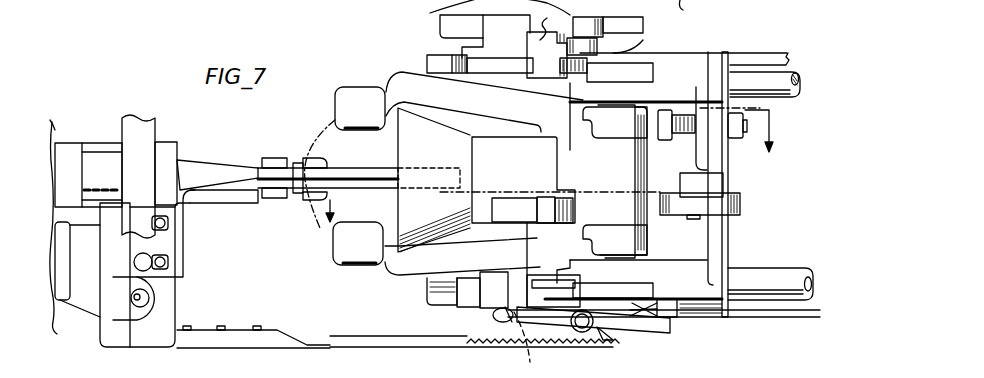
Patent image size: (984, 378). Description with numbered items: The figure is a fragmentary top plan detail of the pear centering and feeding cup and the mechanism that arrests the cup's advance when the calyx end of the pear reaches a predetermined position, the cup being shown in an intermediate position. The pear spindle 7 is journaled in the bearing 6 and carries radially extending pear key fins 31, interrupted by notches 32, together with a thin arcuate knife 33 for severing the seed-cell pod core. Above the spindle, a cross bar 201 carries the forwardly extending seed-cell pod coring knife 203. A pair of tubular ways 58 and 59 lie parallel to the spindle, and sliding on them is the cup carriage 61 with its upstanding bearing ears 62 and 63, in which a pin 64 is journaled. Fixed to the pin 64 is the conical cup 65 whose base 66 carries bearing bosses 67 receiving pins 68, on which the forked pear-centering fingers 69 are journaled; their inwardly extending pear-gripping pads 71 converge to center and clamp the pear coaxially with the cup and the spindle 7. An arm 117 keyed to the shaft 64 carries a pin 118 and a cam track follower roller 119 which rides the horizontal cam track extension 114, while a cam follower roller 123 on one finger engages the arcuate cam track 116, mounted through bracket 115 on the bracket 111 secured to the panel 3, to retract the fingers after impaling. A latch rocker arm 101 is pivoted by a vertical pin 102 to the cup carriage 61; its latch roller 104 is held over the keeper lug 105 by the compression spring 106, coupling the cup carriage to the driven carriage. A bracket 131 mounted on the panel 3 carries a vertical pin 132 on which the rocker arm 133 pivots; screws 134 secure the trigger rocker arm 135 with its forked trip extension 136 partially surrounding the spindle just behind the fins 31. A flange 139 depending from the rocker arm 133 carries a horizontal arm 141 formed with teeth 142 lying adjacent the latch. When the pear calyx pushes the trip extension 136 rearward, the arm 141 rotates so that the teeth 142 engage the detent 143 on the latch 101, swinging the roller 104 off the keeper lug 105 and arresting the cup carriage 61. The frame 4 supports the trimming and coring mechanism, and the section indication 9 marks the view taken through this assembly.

The panel 3 is at (59, 235).
The frame 4 is at (686, 9).
The bearing 6 is at (70, 152).
The pear spindle 7 is at (450, 173).
The section line 9 is at (539, 169).
The pear key fins 31 is at (273, 158).
The notches 32 is at (303, 162).
The arcuate knife 33 is at (322, 158).
The way 58 is at (773, 270).
The way 59 is at (782, 95).
The cup carriage 61 is at (720, 253).
The bearing ear 62 is at (533, 290).
The bearing ear 63 is at (646, 116).
The pin 64 is at (573, 17).
The conical cup 65 is at (400, 147).
The base of the cup 66 is at (519, 175).
The bearing bosses 67 is at (626, 135).
The pins 68 is at (617, 104).
The pear-centering fingers 69 is at (662, 162).
The pear-gripping pads 71 is at (376, 120).
The latch rocker arm 101 is at (667, 330).
The vertical pin 102 is at (571, 327).
The latch roller 104 is at (487, 320).
The keeper lug 105 is at (538, 344).
The compression spring 106 is at (663, 298).
The bracket 111 is at (440, 9).
The cam track extension 114 is at (443, 23).
The bracket 115 is at (463, 45).
The arcuate cam track 116 is at (493, 67).
The arm 117 is at (603, 45).
The pin 118 is at (643, 40).
The cam track follower roller 119 is at (597, 18).
The cam follower roller 123 is at (543, 62).
The bracket 131 is at (83, 270).
The vertical pin 132 is at (137, 317).
The rocker arm 133 is at (103, 320).
The screws 134 is at (140, 257).
The trigger rocker arm 135 is at (182, 237).
The trip extension 136 is at (222, 197).
The flange 139 is at (215, 345).
The horizontal arm 141 is at (363, 348).
The teeth 142 is at (478, 342).
The detent 143 is at (613, 343).
The cross bar 201 is at (143, 123).
The coring knife 203 is at (230, 153).